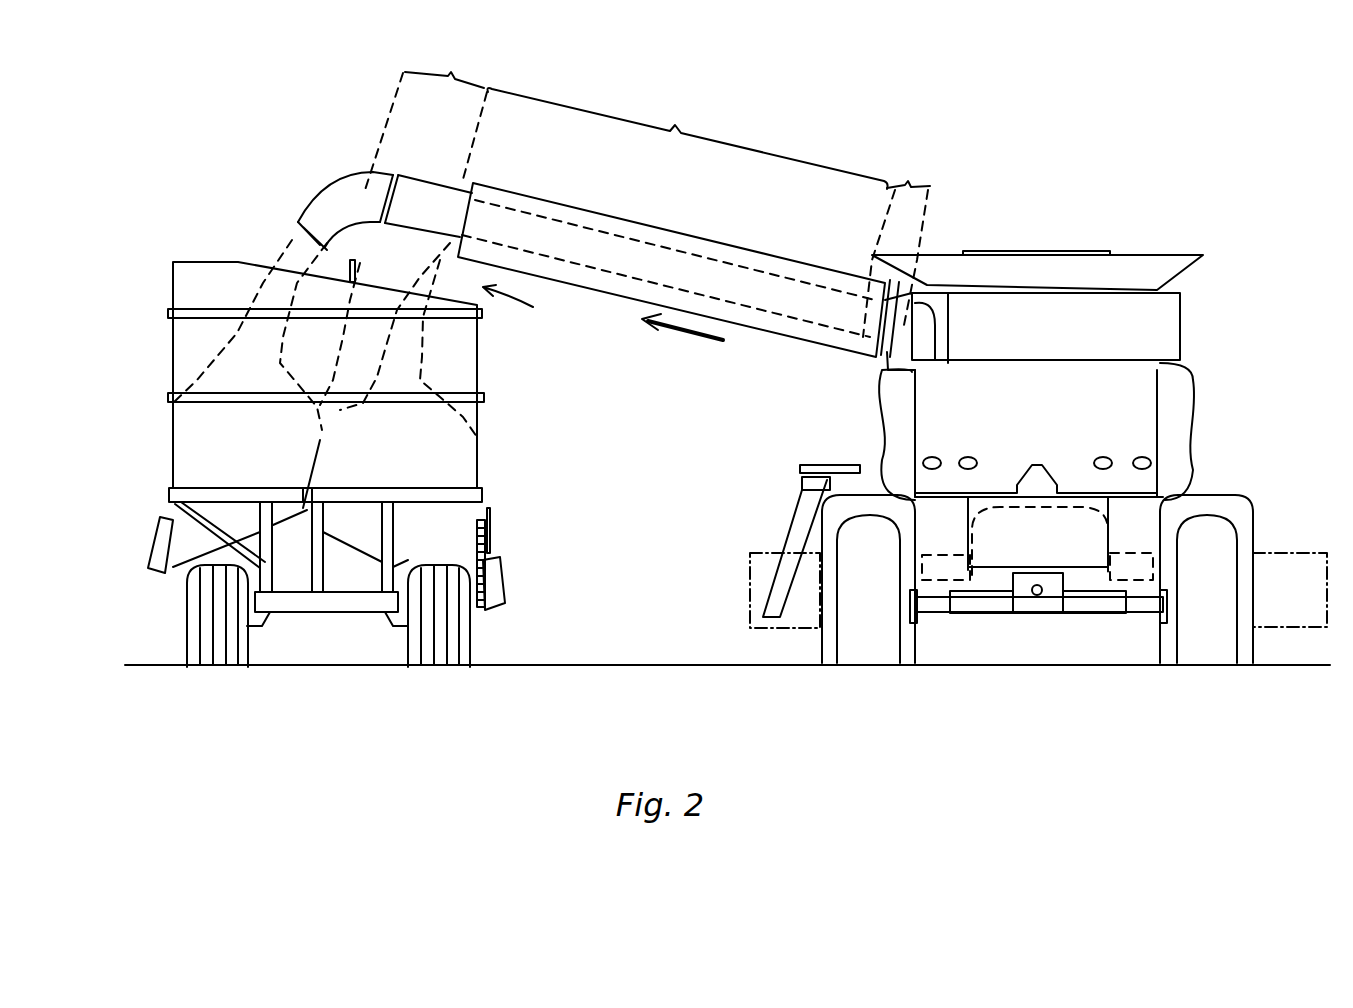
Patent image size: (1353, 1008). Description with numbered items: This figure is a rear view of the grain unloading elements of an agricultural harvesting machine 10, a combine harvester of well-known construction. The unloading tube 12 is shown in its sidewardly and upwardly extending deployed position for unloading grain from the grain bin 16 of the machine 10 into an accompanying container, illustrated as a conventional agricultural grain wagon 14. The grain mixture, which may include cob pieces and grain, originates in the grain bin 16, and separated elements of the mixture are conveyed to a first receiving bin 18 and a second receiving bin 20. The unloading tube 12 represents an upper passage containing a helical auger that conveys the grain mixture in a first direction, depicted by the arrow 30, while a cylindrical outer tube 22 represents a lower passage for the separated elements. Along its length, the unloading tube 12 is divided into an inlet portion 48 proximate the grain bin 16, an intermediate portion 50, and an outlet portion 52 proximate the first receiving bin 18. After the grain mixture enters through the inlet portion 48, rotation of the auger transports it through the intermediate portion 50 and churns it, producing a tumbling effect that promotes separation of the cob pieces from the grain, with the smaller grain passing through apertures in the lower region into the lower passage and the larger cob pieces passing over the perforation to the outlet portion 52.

The agricultural harvesting machine 10 is at (1038, 416).
The unloading tube 12 is at (428, 190).
The agricultural grain wagon 14 is at (478, 443).
The grain bin 16 is at (1027, 236).
The first receiving bin 18 is at (214, 258).
The second receiving bin 20 is at (525, 305).
The cylindrical outer tube 22 is at (687, 230).
The arrow 30 is at (723, 340).
The inlet portion 48 is at (896, 243).
The intermediate portion 50 is at (688, 138).
The outlet portion 52 is at (444, 62).